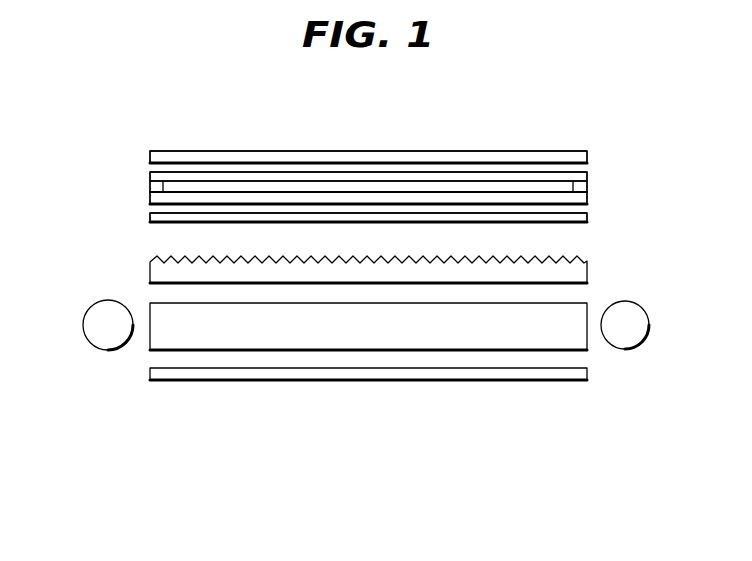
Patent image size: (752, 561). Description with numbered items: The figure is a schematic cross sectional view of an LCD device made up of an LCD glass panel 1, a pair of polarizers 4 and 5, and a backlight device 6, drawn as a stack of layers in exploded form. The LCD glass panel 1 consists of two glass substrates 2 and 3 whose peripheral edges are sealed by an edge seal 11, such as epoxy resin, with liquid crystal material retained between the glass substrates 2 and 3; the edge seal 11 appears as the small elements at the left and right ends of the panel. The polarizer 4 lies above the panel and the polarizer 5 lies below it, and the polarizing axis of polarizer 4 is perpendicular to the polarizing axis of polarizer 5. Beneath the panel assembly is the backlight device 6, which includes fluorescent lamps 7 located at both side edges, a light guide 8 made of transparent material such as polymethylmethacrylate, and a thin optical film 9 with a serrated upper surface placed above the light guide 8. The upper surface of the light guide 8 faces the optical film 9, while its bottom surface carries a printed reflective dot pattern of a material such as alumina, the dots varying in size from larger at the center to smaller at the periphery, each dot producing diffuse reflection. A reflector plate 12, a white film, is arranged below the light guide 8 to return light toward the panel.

The LCD glass panel 1 is at (60, 150).
The glass substrate 2 is at (587, 174).
The glass substrate 3 is at (587, 197).
The polarizer 4 is at (587, 155).
The polarizer 5 is at (587, 217).
The backlight device 6 is at (62, 257).
The fluorescent lamp 7 is at (104, 301).
The light guide 8 is at (587, 345).
The optical film 9 is at (587, 270).
The edge seal 11 is at (150, 188).
The reflector plate 12 is at (587, 372).